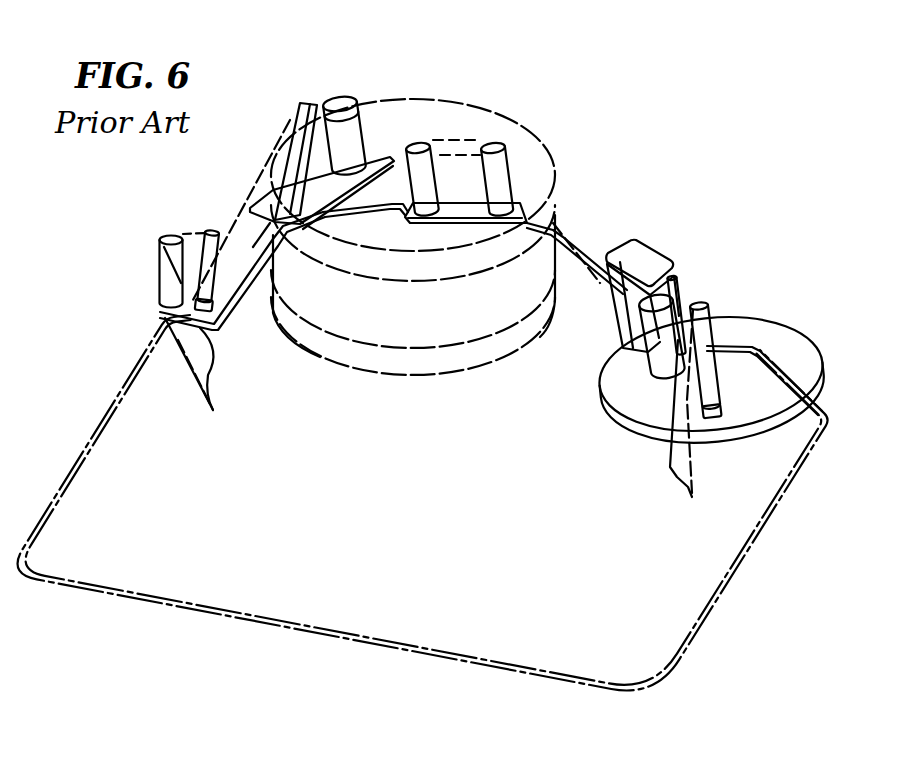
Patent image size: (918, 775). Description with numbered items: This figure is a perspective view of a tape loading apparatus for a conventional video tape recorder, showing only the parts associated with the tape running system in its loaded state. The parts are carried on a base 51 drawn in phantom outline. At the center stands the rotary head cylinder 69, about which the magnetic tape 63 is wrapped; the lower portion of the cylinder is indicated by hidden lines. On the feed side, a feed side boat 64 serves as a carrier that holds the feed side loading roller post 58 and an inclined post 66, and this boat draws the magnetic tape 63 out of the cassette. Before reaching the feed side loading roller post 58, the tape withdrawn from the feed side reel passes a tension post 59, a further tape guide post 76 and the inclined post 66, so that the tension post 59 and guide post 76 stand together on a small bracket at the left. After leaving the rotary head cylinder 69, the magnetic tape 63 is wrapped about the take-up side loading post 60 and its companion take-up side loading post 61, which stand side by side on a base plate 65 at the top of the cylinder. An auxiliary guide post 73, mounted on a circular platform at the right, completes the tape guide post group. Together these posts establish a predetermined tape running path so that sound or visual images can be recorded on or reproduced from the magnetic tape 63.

The substrate 51 is at (130, 437).
The feed side loading roller post 58 is at (340, 98).
The tension post 59 is at (167, 280).
The take-up side loading post 60 is at (417, 147).
The take-up side loading post 61 is at (493, 147).
The magnetic tape 63 is at (413, 347).
The feed side boat 64 is at (310, 183).
The circuit board 65 is at (468, 203).
The inclined post 66 is at (300, 112).
The rotary head cylinder 69 is at (333, 363).
The auxiliary guide post 73 is at (693, 313).
The tape guide post 76 is at (216, 228).